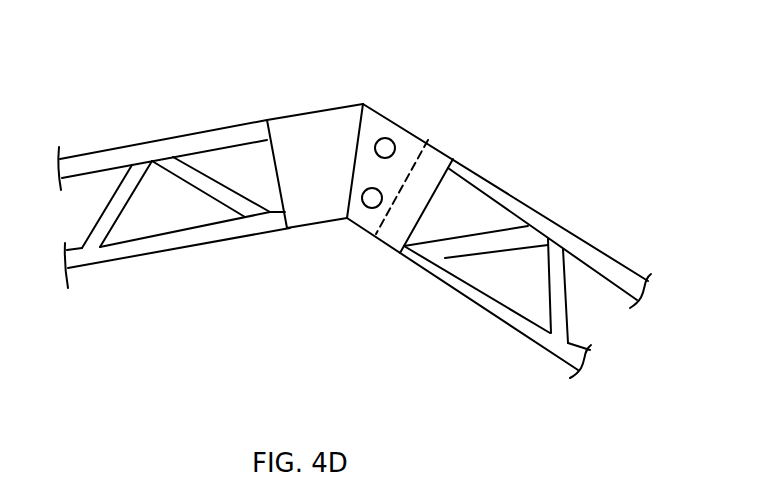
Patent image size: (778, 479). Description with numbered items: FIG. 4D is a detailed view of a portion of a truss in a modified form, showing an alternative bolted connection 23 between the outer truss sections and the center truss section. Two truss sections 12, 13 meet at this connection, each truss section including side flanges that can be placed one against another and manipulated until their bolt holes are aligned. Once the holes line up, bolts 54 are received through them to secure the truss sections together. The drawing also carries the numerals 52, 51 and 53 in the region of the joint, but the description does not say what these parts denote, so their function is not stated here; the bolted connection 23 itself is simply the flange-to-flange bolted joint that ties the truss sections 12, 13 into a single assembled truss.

The truss section 13 is at (210, 93).
The truss section 12 is at (596, 212).
The bolted connection 23 is at (384, 70).
The hinge plate 52 is at (331, 170).
The gusset plate 51 is at (417, 192).
The pin hole 53 is at (393, 142).
The bolt 54 is at (367, 207).